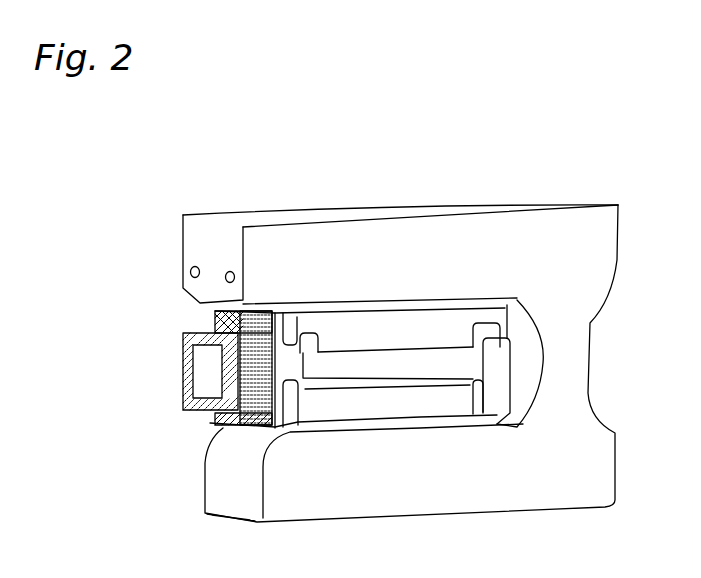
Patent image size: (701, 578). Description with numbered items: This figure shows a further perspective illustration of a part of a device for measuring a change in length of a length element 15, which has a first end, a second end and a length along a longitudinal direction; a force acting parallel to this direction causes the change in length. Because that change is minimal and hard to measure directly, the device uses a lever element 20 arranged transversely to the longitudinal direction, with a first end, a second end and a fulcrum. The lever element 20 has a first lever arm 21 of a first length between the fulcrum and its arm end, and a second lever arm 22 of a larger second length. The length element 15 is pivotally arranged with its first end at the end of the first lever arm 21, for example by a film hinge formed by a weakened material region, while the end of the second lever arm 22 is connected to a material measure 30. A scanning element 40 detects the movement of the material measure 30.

The length element 15 is at (570, 360).
The lever element 20 is at (396, 332).
The first lever arm 21 is at (510, 314).
The second lever arm 22 is at (326, 330).
The material measure 30 is at (234, 328).
The scanning element 40 is at (207, 390).